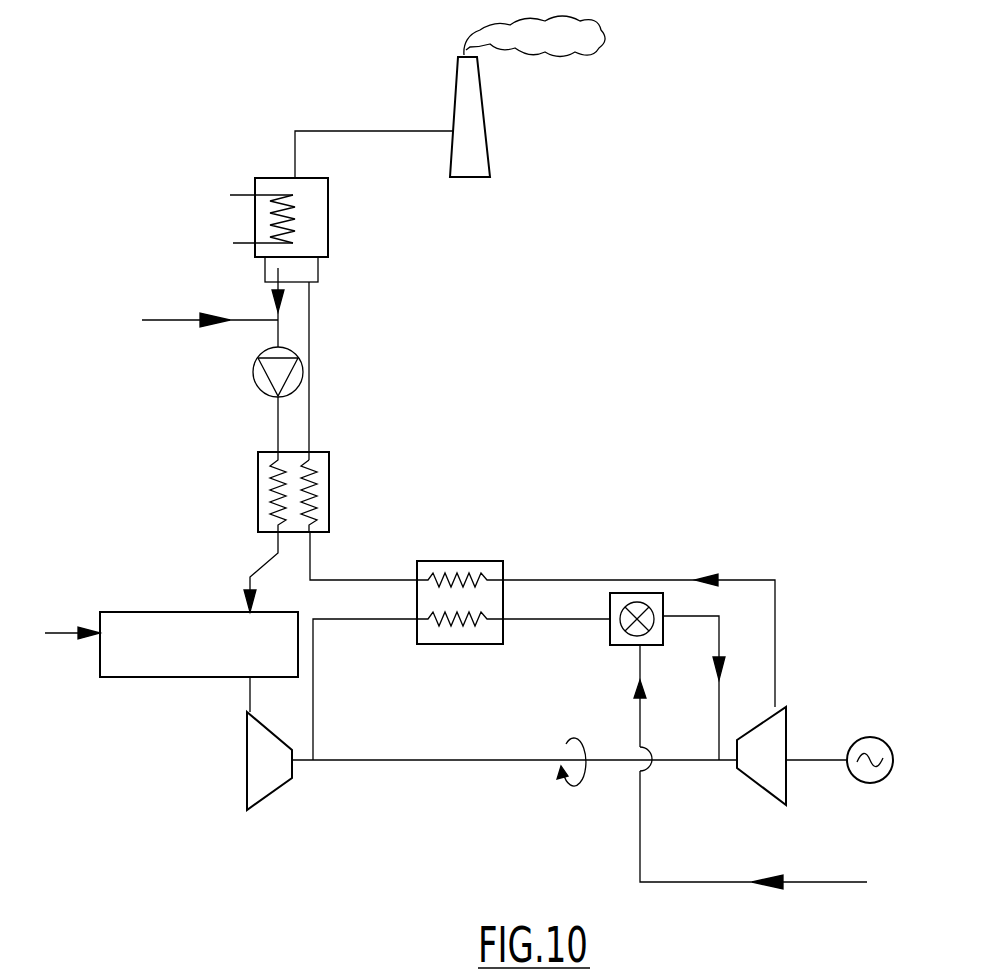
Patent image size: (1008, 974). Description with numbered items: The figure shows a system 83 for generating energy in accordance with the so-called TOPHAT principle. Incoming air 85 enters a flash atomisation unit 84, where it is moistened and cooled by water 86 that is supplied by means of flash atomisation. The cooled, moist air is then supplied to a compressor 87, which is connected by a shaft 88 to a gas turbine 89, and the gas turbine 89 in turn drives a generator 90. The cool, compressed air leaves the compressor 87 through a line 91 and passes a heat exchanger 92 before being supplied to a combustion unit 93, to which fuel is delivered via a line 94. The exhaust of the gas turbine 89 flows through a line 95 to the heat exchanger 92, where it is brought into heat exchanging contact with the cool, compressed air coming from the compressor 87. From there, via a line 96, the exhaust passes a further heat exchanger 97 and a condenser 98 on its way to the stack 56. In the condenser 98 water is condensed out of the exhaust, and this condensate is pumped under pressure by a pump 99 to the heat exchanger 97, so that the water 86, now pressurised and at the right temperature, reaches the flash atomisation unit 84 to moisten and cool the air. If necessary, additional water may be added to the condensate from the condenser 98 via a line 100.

The stack 56 is at (467, 97).
The system for generating energy 83 is at (632, 410).
The flash atomisation unit 84 is at (225, 612).
The air 85 is at (63, 628).
The water 86 is at (254, 572).
The compressor 87 is at (273, 783).
The shaft 88 is at (442, 766).
The gas turbine 89 is at (763, 772).
The generator 90 is at (877, 737).
The line 91 is at (313, 684).
The heat exchanger 92 is at (448, 647).
The combustion unit 93 is at (610, 599).
The line 94 is at (642, 842).
The line 95 is at (776, 598).
The line 96 is at (313, 562).
The heat exchanger 97 is at (323, 468).
The condenser 98 is at (330, 208).
The pump 99 is at (253, 380).
The line 100 is at (243, 318).